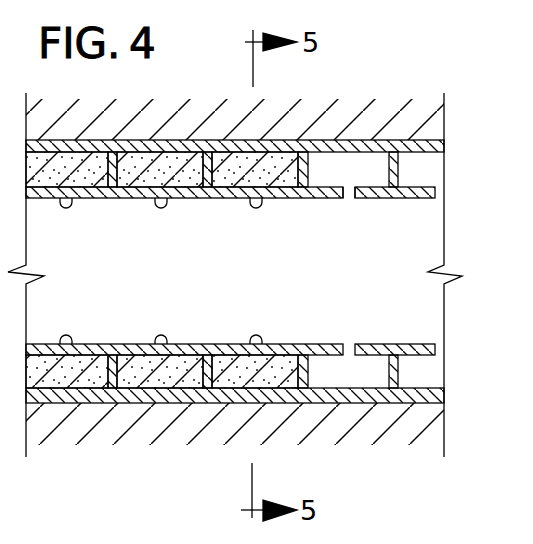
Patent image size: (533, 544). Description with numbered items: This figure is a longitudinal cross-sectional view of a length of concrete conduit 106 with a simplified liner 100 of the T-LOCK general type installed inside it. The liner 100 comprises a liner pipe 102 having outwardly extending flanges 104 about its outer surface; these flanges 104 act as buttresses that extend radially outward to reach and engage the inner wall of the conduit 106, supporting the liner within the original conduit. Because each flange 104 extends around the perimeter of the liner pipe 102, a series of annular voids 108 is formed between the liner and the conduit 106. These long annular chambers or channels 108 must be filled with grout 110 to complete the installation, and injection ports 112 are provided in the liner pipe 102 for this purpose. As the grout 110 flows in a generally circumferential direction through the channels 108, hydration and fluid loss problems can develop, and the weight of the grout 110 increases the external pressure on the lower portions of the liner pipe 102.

The liner 100 is at (306, 336).
The liner pipe 102 is at (113, 350).
The flanges 104 is at (398, 167).
The conduit 106 is at (422, 388).
The annular voids 108 is at (262, 234).
The grout 110 is at (147, 183).
The injection ports 112 is at (350, 204).